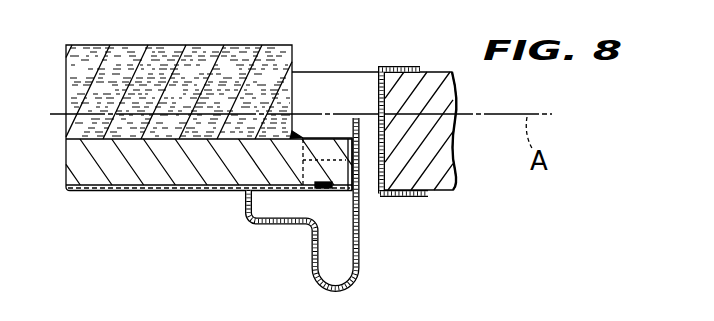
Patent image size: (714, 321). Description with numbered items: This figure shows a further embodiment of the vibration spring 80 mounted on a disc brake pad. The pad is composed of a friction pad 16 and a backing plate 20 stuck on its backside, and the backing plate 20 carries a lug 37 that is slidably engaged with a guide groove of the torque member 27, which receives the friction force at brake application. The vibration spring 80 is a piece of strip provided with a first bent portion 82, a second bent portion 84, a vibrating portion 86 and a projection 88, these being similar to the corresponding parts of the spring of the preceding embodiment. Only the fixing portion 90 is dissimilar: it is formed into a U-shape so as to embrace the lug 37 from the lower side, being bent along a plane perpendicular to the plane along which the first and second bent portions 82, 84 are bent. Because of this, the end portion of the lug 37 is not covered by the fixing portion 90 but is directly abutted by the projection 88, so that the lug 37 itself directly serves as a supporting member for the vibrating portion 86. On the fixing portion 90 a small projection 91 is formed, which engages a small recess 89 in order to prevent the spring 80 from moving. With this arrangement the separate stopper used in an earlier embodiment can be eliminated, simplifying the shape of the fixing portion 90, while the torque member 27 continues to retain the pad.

The friction pad 16 is at (127, 57).
The backing plate 20 is at (112, 178).
The torque member 27 is at (437, 157).
The lug 37 is at (333, 150).
The vibration spring 80 is at (305, 207).
The first bent portion 82 is at (244, 199).
The second bent portion 84 is at (343, 290).
The vibrating portion 86 is at (368, 118).
The projection 88 is at (375, 197).
The small recess 89 is at (345, 176).
The fixing portion 90 is at (311, 136).
The small projection 91 is at (323, 180).